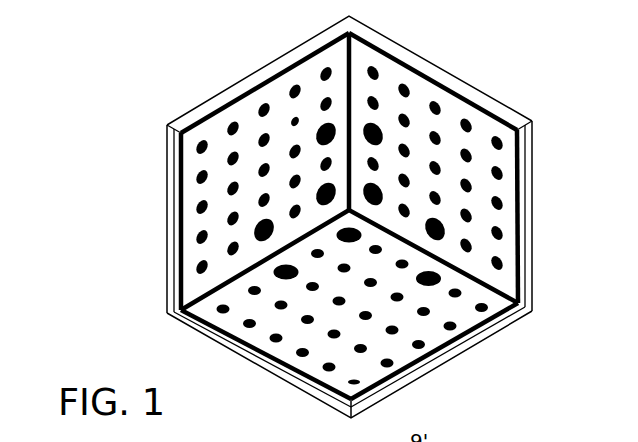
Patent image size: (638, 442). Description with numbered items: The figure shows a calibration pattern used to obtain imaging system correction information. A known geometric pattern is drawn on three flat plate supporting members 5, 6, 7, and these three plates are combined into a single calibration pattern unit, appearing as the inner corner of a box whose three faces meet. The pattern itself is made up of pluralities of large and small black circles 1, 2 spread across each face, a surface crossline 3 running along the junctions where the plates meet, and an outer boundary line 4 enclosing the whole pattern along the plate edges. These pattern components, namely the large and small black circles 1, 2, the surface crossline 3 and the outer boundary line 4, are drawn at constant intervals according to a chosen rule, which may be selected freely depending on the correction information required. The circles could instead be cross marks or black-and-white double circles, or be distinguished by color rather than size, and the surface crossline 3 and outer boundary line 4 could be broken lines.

The large black circle 1 is at (323, 132).
The small black circle 2 is at (327, 72).
The surface crossline 3 is at (353, 52).
The outer boundary line 4 is at (475, 102).
The flat plate supporting member 5 is at (166, 197).
The flat plate supporting member 6 is at (533, 190).
The flat plate supporting member 7 is at (455, 357).